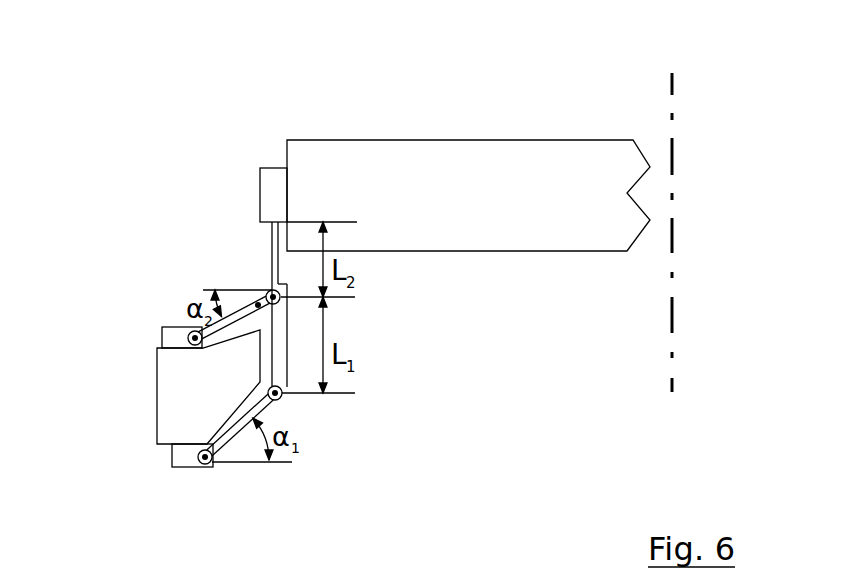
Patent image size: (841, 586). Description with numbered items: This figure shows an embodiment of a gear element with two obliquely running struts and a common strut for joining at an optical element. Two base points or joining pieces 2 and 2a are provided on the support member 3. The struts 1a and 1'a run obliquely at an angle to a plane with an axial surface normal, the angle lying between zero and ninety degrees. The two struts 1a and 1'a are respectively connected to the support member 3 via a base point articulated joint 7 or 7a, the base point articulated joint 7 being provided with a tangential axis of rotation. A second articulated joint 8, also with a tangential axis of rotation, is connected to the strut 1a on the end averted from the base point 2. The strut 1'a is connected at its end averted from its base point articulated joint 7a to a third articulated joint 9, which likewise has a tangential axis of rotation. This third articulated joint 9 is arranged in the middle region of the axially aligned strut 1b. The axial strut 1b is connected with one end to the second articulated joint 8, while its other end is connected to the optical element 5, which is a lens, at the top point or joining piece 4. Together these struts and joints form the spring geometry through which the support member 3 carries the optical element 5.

The strut 1a is at (248, 418).
The axial strut 1b is at (278, 357).
The strut 1'a is at (181, 359).
The base point 2 is at (178, 458).
The base point 2a is at (173, 340).
The support member 3 is at (164, 362).
The top point 4 is at (273, 198).
The optical element 5 is at (370, 173).
The base point articulated joint 7 is at (209, 463).
The base point articulated joint 7a is at (190, 333).
The second articulated joint 8 is at (281, 397).
The third articulated joint 9 is at (270, 291).